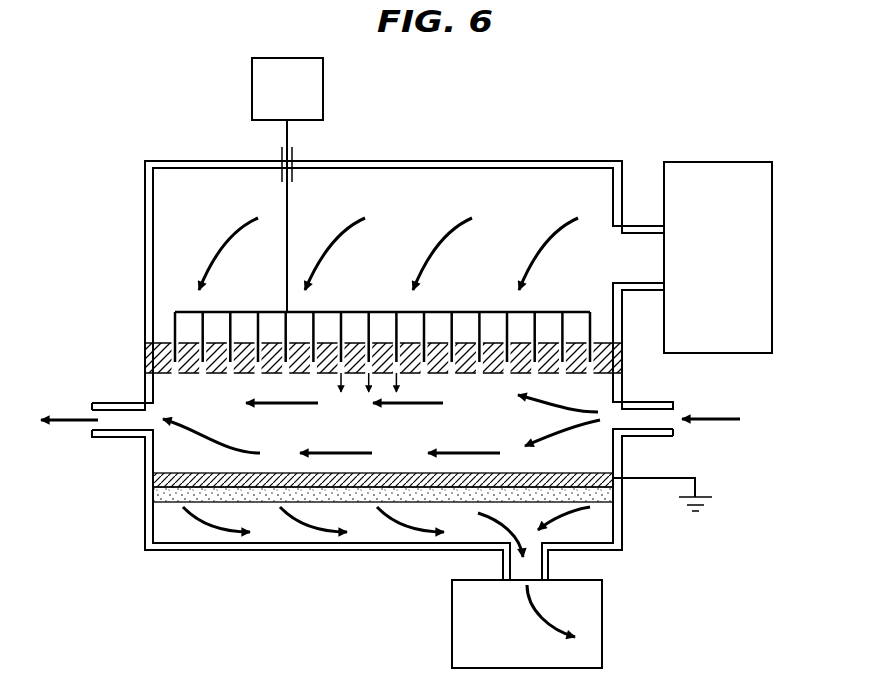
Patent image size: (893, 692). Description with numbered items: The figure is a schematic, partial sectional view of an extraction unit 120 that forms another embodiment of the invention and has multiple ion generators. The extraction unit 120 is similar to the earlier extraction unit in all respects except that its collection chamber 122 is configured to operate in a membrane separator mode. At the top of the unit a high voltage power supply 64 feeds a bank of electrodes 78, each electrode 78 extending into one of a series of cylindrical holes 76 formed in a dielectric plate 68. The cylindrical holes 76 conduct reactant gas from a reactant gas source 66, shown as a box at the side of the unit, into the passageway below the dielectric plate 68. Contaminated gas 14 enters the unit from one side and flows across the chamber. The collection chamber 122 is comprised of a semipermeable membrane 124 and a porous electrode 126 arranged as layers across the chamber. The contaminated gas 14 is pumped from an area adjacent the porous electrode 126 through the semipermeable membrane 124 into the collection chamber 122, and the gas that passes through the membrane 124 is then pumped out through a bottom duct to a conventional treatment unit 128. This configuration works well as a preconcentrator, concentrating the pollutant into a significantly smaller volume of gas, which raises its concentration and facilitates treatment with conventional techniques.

The contaminated gas 14 is at (718, 419).
The high voltage power supply 64 is at (252, 94).
The reactant gas source 66 is at (772, 233).
The dielectric plate 68 is at (383, 301).
The cylindrical holes 76 is at (172, 373).
The electrode 78 is at (366, 325).
The extraction unit 120 is at (655, 70).
The collection chamber 122 is at (292, 551).
The semipermeable membrane 124 is at (165, 500).
The porous electrode 126 is at (170, 476).
The conventional treatment unit 128 is at (602, 604).